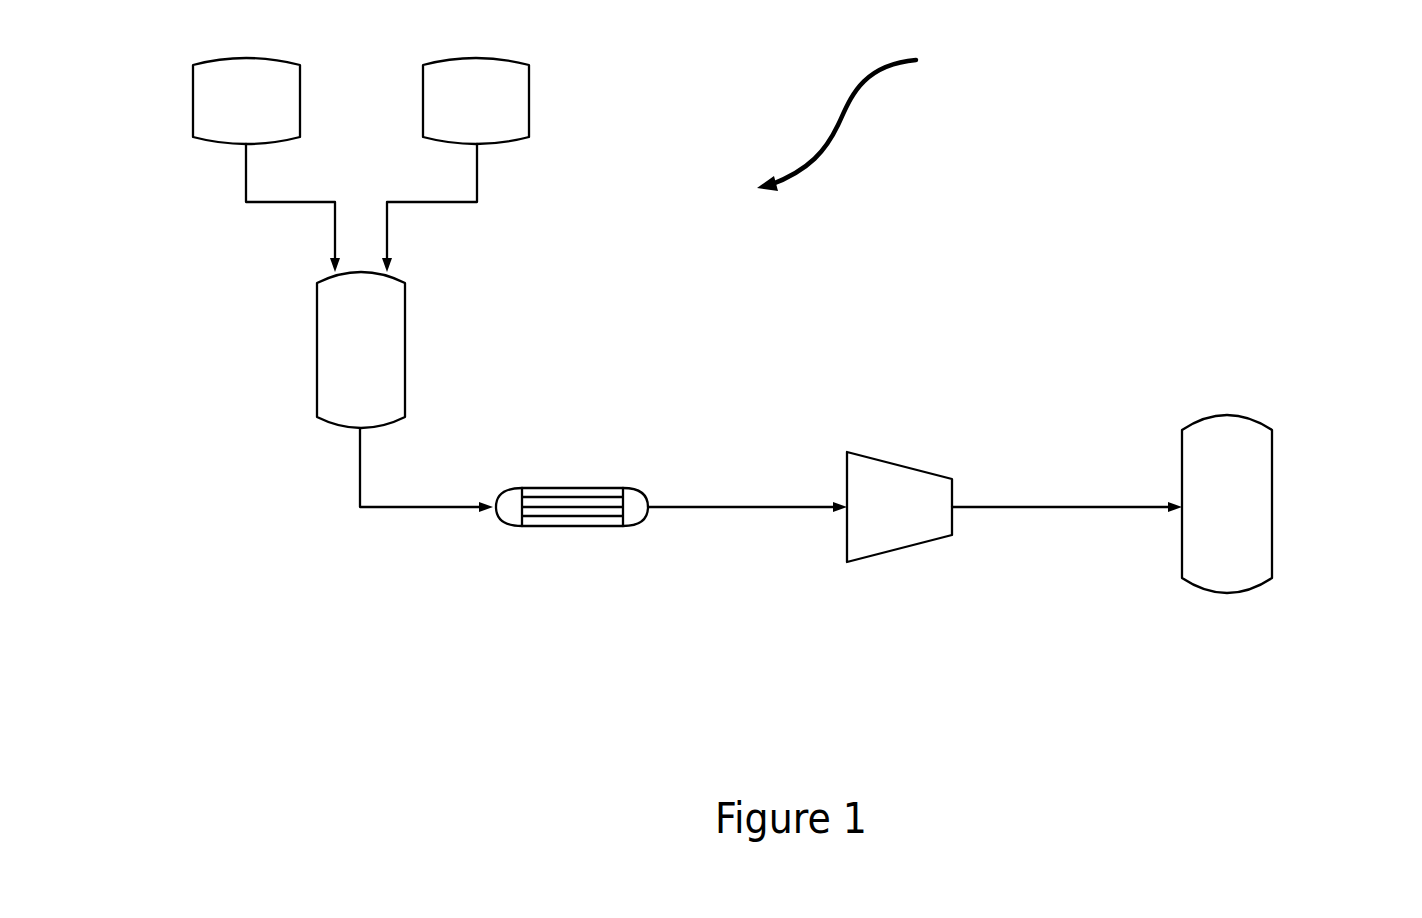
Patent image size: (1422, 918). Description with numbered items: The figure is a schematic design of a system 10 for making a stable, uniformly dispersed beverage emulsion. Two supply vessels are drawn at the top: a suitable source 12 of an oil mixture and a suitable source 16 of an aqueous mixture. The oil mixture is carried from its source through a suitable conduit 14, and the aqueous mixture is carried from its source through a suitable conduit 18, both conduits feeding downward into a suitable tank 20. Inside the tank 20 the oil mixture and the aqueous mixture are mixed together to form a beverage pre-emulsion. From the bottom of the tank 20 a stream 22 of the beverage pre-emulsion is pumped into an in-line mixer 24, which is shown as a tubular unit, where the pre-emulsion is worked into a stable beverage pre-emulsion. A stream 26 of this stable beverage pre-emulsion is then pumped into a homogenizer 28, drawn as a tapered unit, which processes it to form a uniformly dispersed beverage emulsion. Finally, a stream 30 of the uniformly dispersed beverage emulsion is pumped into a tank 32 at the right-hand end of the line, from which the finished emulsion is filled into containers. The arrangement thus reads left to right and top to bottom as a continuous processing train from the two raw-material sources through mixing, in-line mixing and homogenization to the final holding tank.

The system 10 is at (863, 122).
The source of oil mixture 12 is at (193, 103).
The conduit 14 is at (245, 183).
The source of aqueous mixture 16 is at (530, 108).
The conduit 18 is at (477, 183).
The tank 20 is at (405, 365).
The stream of beverage pre-emulsion 22 is at (410, 512).
The in-line mixer 24 is at (562, 488).
The stream of stable beverage pre-emulsion 26 is at (733, 507).
The homogenizer 28 is at (900, 462).
The stream of uniformly dispersed beverage emulsion 30 is at (1075, 507).
The tank 32 is at (1272, 507).